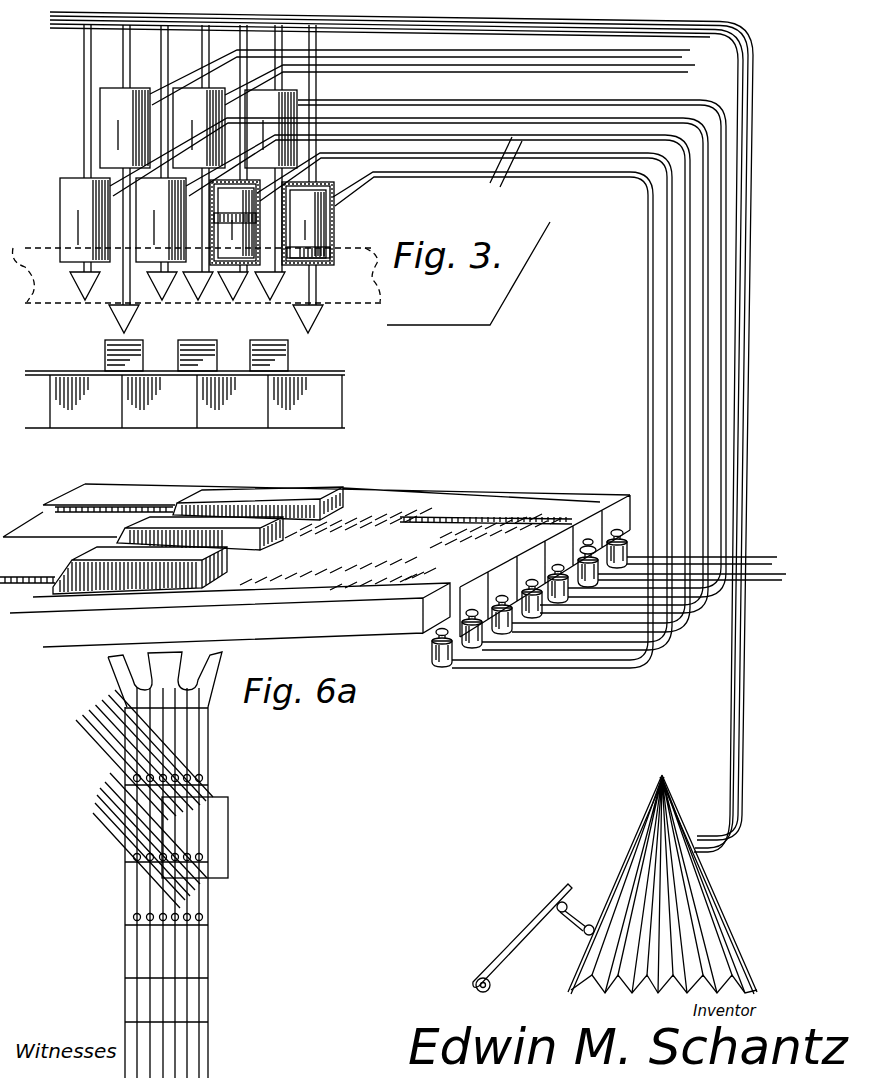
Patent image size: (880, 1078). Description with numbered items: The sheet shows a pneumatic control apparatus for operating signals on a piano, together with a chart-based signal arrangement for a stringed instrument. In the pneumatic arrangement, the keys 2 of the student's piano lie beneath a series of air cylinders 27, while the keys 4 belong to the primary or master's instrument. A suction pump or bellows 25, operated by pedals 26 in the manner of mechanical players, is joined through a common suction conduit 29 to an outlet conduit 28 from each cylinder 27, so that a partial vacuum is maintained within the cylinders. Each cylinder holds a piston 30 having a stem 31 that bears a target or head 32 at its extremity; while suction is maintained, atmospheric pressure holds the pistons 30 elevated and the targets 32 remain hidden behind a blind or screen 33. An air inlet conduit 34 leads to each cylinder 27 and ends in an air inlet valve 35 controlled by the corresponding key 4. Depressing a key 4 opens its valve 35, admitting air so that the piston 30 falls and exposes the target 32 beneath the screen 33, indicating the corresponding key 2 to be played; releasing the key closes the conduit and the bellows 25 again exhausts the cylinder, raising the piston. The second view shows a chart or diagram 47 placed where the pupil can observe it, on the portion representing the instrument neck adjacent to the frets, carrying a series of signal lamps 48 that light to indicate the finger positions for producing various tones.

In FIG. 3, the keys of the piano 2 is at (288, 356).
In FIG. 3, the keys of the primary or master's instrument 4 is at (200, 493).
In FIG. 3, the suction pump or bellows 25 is at (634, 829).
In FIG. 3, the pedals 26 is at (533, 938).
In FIG. 3, the air cylinders 27 is at (70, 176).
In FIG. 3, the outlet conduit 28 is at (90, 80).
In FIG. 3, the common suction conduit 29 is at (750, 378).
In FIG. 3, the piston 30 is at (318, 237).
In FIG. 3, the stem 31 is at (119, 274).
In FIG. 3, the target or head 32 is at (116, 313).
In FIG. 3, the blind or screen 33 is at (62, 290).
In FIG. 3, the air inlet conduit 34 is at (645, 420).
In FIG. 3, the air inlet valve 35 is at (475, 647).
In FIG. 6A, the chart or diagram 47 is at (200, 965).
In FIG. 6A, the signal lamps 48 is at (205, 779).